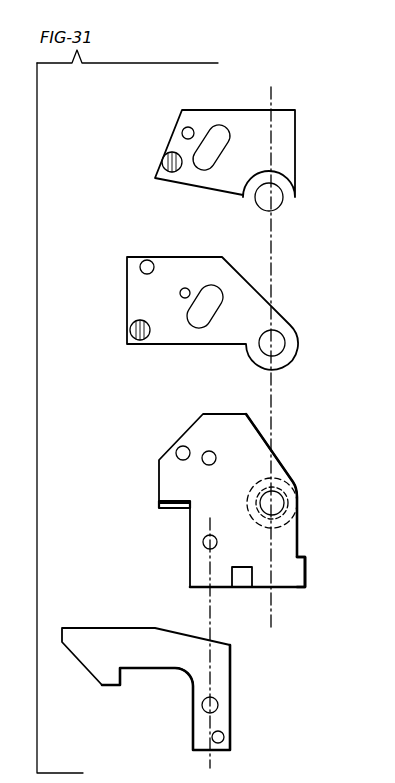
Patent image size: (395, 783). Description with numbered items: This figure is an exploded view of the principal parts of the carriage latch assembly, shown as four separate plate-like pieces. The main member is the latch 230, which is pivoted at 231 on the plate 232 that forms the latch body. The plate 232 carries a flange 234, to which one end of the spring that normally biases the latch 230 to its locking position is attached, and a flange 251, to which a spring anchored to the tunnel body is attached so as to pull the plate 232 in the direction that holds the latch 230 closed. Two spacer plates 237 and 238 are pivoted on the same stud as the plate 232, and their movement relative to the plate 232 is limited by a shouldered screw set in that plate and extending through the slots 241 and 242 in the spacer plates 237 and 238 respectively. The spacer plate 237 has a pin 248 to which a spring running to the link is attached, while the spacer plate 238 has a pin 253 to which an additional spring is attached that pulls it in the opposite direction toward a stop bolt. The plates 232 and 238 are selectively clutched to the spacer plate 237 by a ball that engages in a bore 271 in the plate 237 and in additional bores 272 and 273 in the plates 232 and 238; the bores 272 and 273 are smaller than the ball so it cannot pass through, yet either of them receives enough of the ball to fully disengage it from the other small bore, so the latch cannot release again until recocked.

The latch 230 is at (97, 662).
The pivot 231 is at (203, 542).
The plate 232 is at (200, 430).
The flange 234 is at (301, 588).
The spacer plate 237 is at (185, 265).
The spacer plate 238 is at (201, 115).
The slot 241 is at (203, 320).
The slot 242 is at (198, 153).
The pin 248 is at (130, 332).
The flange 251 is at (168, 509).
The pin 253 is at (161, 164).
The bore 271 is at (179, 292).
The bore 272 is at (177, 451).
The bore 273 is at (183, 128).